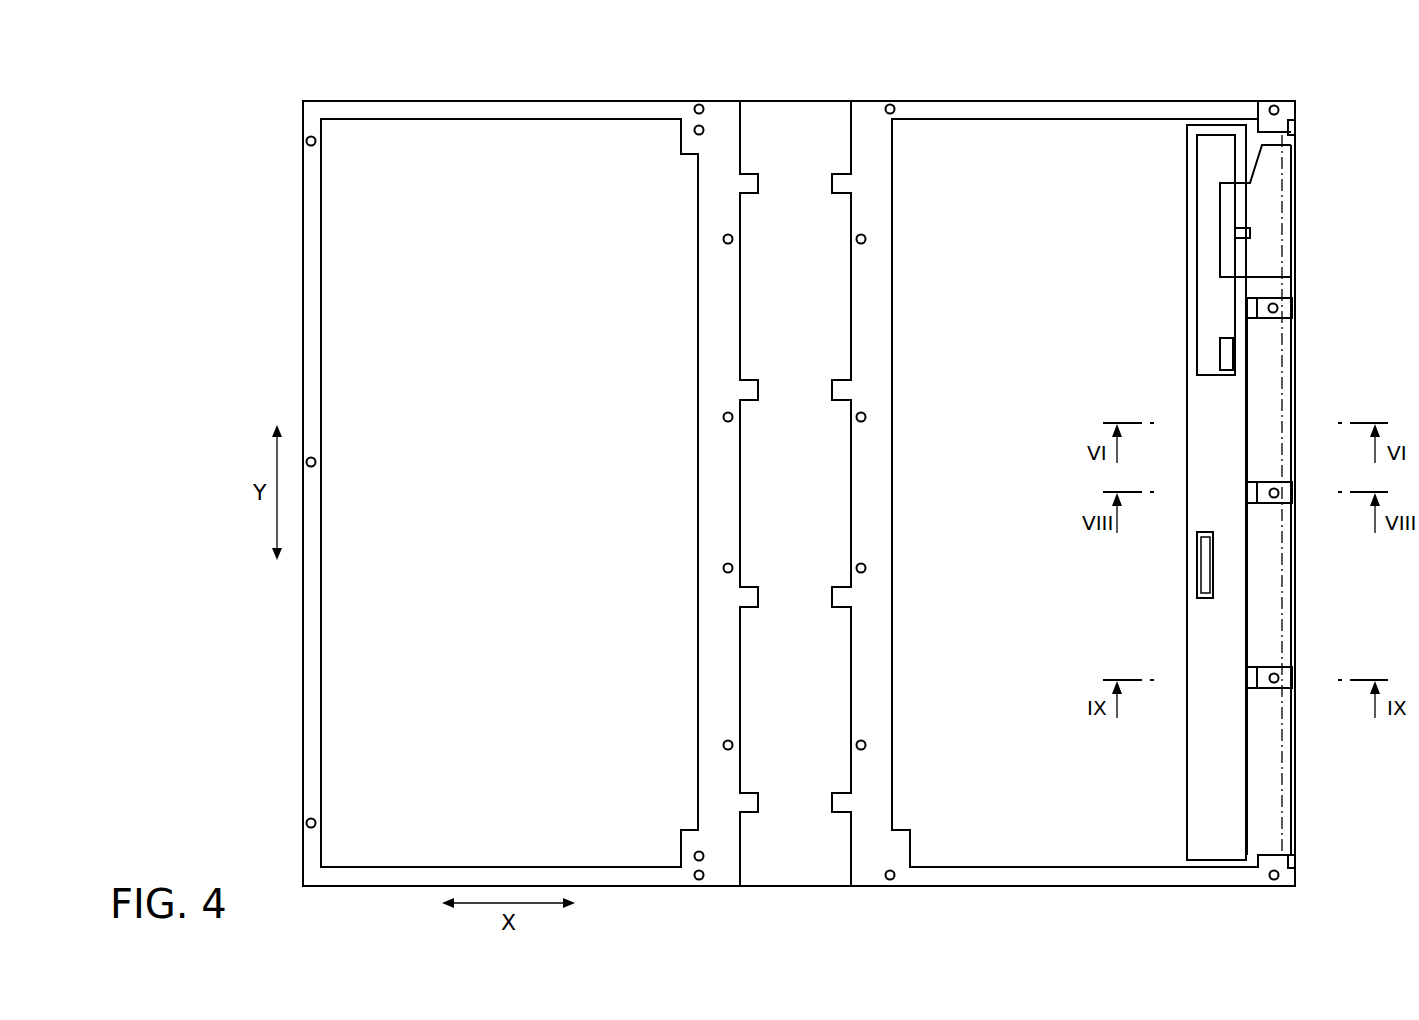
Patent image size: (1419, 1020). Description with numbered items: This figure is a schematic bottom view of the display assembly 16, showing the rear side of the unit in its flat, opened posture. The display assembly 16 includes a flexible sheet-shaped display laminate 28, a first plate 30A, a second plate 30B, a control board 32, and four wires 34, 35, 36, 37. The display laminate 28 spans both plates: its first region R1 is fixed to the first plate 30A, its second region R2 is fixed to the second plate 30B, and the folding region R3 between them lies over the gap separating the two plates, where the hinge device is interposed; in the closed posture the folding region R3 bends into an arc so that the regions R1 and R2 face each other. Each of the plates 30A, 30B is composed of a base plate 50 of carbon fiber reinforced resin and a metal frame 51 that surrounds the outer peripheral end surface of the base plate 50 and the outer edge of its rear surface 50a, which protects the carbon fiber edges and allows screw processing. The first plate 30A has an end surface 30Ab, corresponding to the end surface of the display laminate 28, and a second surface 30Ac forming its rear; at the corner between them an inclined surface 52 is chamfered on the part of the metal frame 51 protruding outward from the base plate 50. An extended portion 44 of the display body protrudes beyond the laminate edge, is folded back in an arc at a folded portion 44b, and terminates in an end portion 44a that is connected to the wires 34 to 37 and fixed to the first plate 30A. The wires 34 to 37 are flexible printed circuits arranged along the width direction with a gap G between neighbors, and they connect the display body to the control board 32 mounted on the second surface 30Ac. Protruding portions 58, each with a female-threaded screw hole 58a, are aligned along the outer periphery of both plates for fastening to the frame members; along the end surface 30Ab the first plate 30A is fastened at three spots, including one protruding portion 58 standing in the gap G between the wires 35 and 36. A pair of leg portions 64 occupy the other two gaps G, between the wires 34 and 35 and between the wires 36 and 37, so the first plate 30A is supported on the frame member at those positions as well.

The display assembly 16 is at (240, 59).
The display laminate 28 is at (794, 94).
The first plate 30A is at (1105, 53).
The second plate 30B is at (525, 53).
The end surface 30Ab is at (1297, 103).
The second surface 30Ac is at (1268, 100).
The control board 32 is at (1197, 613).
The wire 34 is at (1272, 291).
The wire 35 is at (1272, 389).
The wire 36 is at (1272, 590).
The wire 37 is at (1272, 790).
The extended portion 44 is at (1352, 135).
The end portion 44a is at (1283, 857).
The folded portion 44b is at (1298, 130).
The base plate 50 is at (447, 150).
The rear surface 50a is at (622, 840).
The metal frame 51 is at (500, 112).
The inclined surface 52 is at (1297, 629).
The protruding portion 58 is at (797, 490).
The screw hole 58a is at (306, 141).
The leg portion 64 is at (1285, 312).
The gap G is at (1258, 312).
The first region R1 is at (974, 152).
The second region R2 is at (597, 152).
The folding region R3 is at (822, 120).